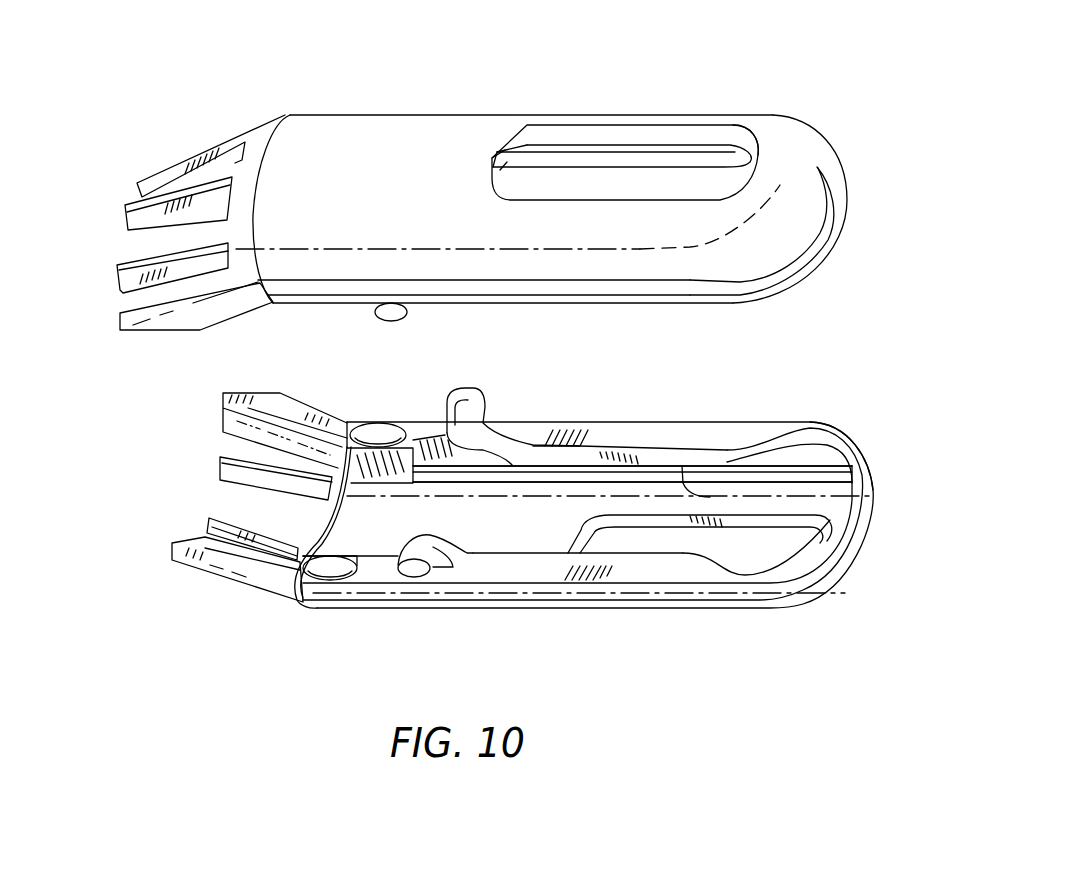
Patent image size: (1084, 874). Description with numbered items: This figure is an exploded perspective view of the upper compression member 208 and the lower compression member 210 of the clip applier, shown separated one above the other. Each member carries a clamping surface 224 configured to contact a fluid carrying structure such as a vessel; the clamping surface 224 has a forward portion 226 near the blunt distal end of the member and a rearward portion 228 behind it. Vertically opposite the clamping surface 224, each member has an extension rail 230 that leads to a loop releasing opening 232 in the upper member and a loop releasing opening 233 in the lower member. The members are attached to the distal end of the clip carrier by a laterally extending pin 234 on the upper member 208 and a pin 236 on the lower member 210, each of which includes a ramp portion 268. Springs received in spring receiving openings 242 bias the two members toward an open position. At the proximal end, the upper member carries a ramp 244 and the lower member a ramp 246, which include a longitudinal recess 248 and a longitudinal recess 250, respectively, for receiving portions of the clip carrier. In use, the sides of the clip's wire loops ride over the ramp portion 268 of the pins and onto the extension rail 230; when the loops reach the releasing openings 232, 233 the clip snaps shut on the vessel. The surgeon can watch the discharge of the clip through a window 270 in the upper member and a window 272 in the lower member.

The upper compression member 208 is at (355, 132).
The lower compression member 210 is at (707, 608).
The clamping surface 224 is at (668, 437).
The forward portion 226 is at (738, 437).
The rearward portion 228 is at (560, 425).
The extension rail 230 is at (628, 153).
The loop releasing opening 232 is at (735, 150).
The loop releasing opening 233 is at (682, 466).
The pin 234 is at (389, 322).
The pin 236 is at (487, 395).
The spring receiving opening 242 is at (385, 432).
The ramp 244 is at (162, 195).
The ramp 246 is at (238, 478).
The longitudinal recess 248 is at (137, 298).
The longitudinal recess 250 is at (232, 447).
The ramp portion 268 is at (481, 450).
The window 270 is at (547, 133).
The window 272 is at (788, 547).